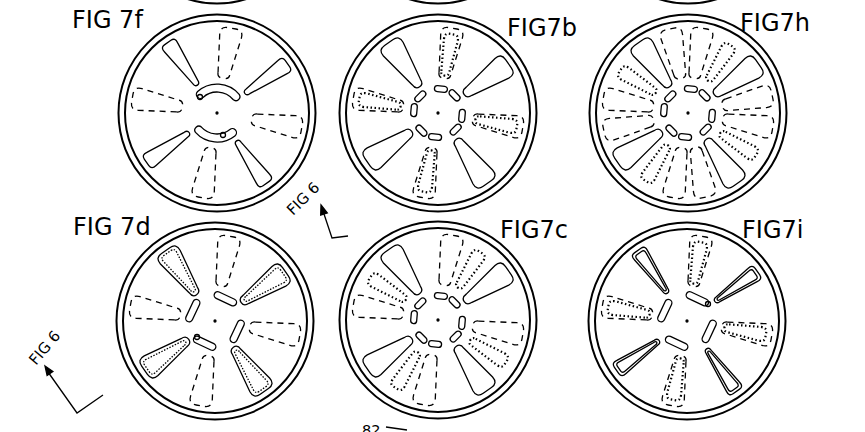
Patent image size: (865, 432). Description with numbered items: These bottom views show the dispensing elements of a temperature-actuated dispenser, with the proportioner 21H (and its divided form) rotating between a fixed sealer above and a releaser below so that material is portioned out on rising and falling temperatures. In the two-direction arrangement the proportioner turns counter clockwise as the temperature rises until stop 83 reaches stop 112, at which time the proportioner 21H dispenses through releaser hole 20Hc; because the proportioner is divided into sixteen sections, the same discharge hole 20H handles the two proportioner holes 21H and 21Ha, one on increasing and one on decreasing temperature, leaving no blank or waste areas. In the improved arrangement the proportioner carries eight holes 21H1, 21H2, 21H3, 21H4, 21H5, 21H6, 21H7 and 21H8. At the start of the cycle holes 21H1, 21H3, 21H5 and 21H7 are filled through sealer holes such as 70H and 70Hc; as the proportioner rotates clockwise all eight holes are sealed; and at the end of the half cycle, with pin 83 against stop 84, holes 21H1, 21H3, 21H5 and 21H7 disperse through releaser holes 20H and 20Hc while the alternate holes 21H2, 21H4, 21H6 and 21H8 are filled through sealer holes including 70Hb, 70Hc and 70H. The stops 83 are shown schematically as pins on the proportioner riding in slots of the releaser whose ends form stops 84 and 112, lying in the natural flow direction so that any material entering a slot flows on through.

In FIG. 7F, the discharge hole 20H is at (289, 72).
In FIG. 7B, the discharge hole 20H is at (506, 72).
In FIG. 7H, the discharge hole 20H is at (756, 72).
In FIG. 7C, the discharge hole 20H is at (506, 273).
In FIG. 7I, the discharge hole 20H is at (753, 272).
In FIG. 7F, the releaser hole 20Hc is at (170, 56).
In FIG. 7F, the proportioner hole 21H is at (162, 45).
In FIG. 7B, the proportioner hole 21H is at (466, 54).
In FIG. 7D, the proportioner hole 21H is at (281, 272).
In FIG. 7C, the proportioner hole 21H is at (493, 252).
In FIG. 7F, the proportioner hole 21Ha is at (283, 60).
In FIG. 7B, the proportioner hole 21Ha is at (519, 167).
In FIG. 7D, the proportioner hole 21Ha is at (270, 382).
In FIG. 7C, the proportioner hole 21Ha is at (500, 378).
In FIG. 7H, the proportioner hole 21H1 is at (741, 58).
In FIG. 7I, the proportioner hole 21H1 is at (753, 288).
In FIG. 7I, the proportioner hole 21H2 is at (757, 356).
In FIG. 7I, the proportioner hole 21H3 is at (733, 384).
In FIG. 7I, the proportioner hole 21H4 is at (666, 387).
In FIG. 7I, the proportioner hole 21H5 is at (617, 370).
In FIG. 7I, the proportioner hole 21H6 is at (616, 312).
In FIG. 7I, the proportioner hole 21H7 is at (643, 272).
In FIG. 7H, the proportioner hole 21H8 is at (672, 40).
In FIG. 7I, the proportioner hole 21H8 is at (687, 243).
In FIG. 7F, the sealer hole 70H is at (243, 35).
In FIG. 7B, the sealer hole 70H is at (443, 45).
In FIG. 7H, the sealer hole 70H is at (701, 36).
In FIG. 7I, the sealer hole 70H is at (716, 253).
In FIG. 7H, the sealer hole 70Hb is at (650, 2).
In FIG. 7I, the sealer hole 70Hb is at (768, 333).
In FIG. 7I, the sealer hole 70Hc is at (612, 316).
In FIG. 7F, the stop 83 is at (198, 96).
In FIG. 7D, the stop 83 is at (196, 340).
In FIG. 7I, the stop 83 is at (706, 302).
In FIG. 7D, the stop 84 is at (195, 338).
In FIG. 7I, the stop 84 is at (711, 304).
In FIG. 7F, the stop 112 is at (196, 100).